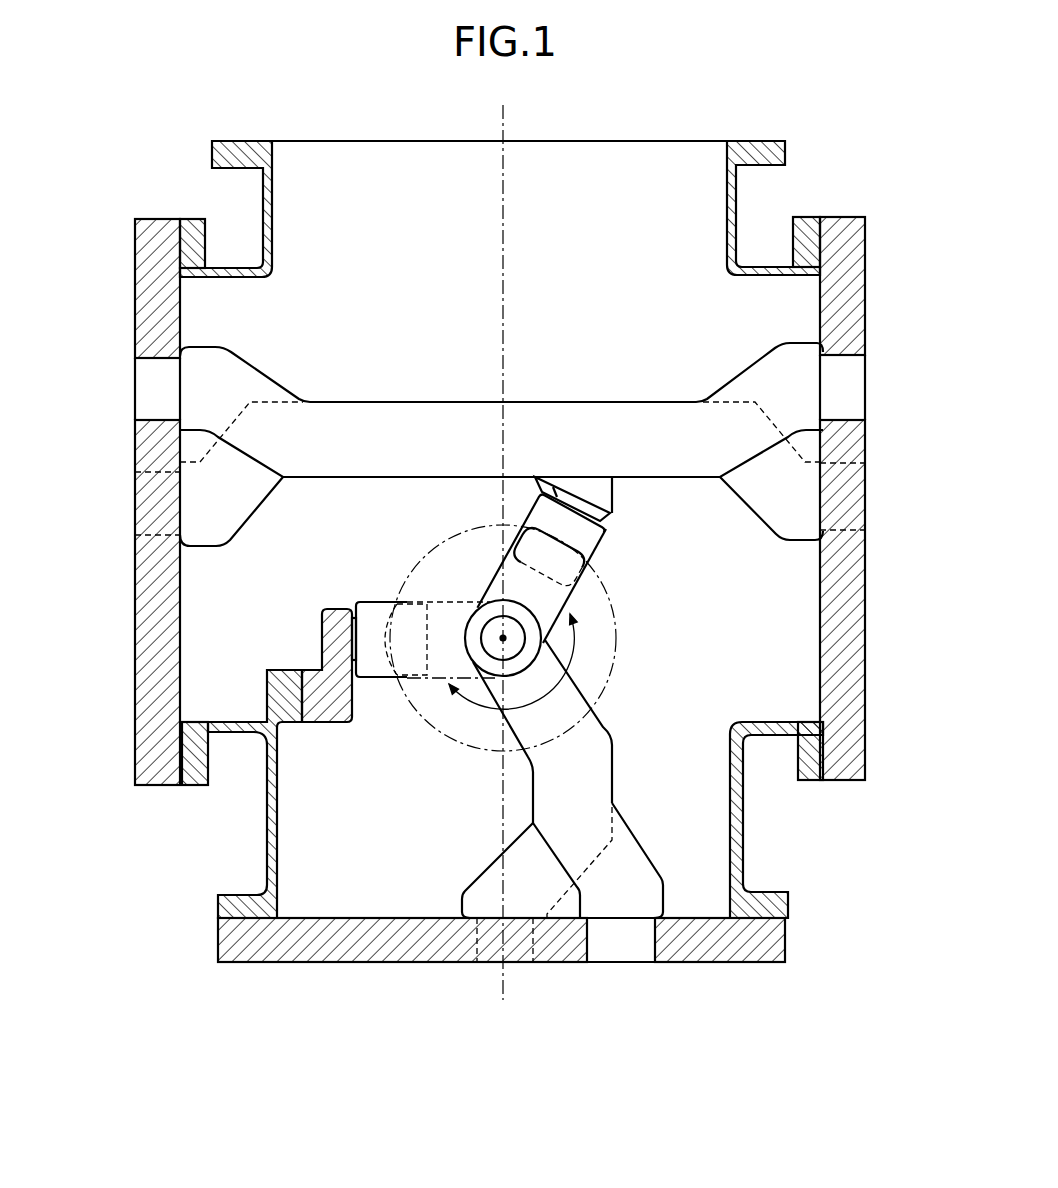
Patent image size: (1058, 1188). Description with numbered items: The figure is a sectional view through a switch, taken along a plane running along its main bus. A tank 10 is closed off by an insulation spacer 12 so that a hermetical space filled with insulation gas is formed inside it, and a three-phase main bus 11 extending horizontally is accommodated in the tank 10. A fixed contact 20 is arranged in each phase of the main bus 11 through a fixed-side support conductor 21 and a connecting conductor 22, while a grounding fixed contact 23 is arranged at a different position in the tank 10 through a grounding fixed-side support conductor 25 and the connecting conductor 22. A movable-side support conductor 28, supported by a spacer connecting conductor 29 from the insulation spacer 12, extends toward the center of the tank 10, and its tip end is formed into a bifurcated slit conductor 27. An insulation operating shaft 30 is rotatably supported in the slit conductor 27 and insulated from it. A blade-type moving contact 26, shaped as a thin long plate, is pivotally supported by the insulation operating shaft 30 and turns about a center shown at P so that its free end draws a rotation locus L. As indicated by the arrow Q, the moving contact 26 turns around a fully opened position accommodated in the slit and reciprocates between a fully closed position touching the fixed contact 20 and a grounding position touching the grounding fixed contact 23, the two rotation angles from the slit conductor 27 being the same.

The tank 10 is at (737, 210).
The three-phase main bus 11 is at (672, 397).
The insulation spacer 12 is at (865, 342).
The fixed contact 20 is at (593, 560).
The fixed-side support conductor 21 is at (610, 513).
The connecting conductor 22 is at (605, 528).
The grounding fixed contact 23 is at (377, 680).
The grounding fixed-side support conductor 25 is at (322, 636).
The moving contact 26 is at (570, 597).
The slit conductor 27 is at (513, 728).
The movable-side support conductor 28 is at (612, 787).
The spacer connecting conductor 29 is at (663, 885).
The insulation operating shaft 30 is at (513, 658).
The pivot point P is at (503, 638).
The arrow Q is at (522, 661).
The rotation locus L is at (508, 638).